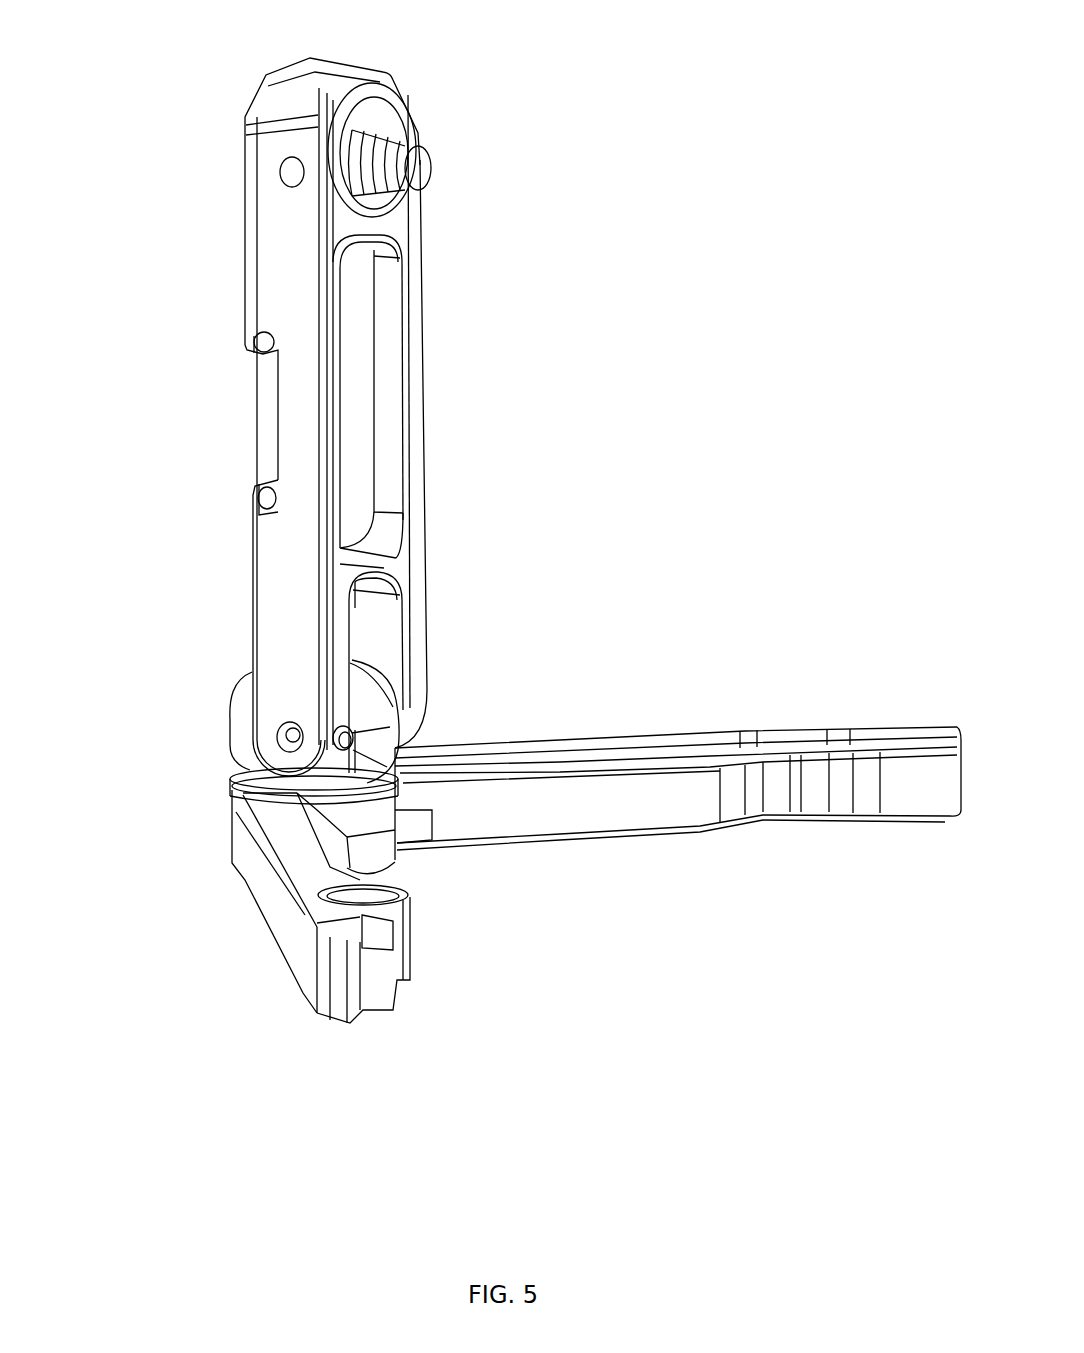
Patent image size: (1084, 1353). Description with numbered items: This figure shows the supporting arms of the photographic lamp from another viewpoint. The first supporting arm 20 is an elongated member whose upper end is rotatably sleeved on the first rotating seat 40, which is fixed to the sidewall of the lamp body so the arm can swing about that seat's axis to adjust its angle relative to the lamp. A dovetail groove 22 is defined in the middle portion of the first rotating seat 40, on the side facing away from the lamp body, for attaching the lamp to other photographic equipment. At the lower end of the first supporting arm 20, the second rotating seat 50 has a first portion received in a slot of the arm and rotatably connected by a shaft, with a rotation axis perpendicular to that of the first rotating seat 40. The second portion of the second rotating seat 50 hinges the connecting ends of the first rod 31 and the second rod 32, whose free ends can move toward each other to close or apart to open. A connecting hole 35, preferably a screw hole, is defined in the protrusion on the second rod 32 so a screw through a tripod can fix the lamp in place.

The first supporting arm 20 is at (410, 563).
The dovetail groove 22 is at (273, 415).
The first rotating seat 40 is at (427, 157).
The second rotating seat 50 is at (242, 708).
The second rod 32 is at (300, 858).
The connecting hole 35 is at (363, 900).
The first rod 31 is at (572, 822).